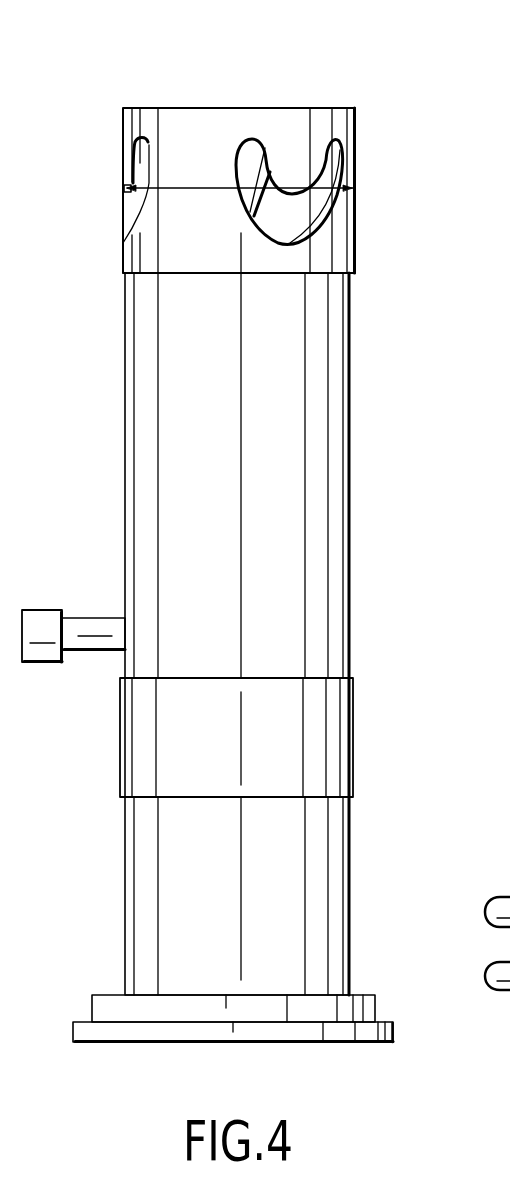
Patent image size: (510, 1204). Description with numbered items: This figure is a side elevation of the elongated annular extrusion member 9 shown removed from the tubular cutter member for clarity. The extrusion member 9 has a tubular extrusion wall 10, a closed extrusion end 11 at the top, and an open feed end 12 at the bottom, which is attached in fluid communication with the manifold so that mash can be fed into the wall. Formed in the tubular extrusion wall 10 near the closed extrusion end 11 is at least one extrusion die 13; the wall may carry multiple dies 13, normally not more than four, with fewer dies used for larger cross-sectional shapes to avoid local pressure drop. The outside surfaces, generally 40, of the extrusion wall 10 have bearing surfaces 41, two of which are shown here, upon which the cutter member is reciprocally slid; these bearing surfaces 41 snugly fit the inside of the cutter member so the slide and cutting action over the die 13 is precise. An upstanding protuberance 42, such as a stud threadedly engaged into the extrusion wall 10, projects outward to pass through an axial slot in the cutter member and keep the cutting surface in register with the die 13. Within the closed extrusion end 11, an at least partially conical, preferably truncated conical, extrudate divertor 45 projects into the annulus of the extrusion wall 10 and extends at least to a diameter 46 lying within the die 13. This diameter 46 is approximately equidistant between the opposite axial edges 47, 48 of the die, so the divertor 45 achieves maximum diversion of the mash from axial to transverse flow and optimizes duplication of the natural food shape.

The elongated annular extrusion member 9 is at (130, 902).
The tubular extrusion wall 10 is at (125, 331).
The closed extrusion end 11 is at (157, 107).
The open feed end 12 is at (130, 1032).
The extrusion die 13 is at (137, 201).
The outside surfaces 40 is at (172, 497).
The bearing surface 41 is at (147, 258).
The upstanding protuberance 42 is at (47, 663).
The extrudate divertor 45 is at (272, 182).
The diameter 46 is at (189, 188).
The axial edge 47 is at (293, 243).
The axial edge 48 is at (252, 147).